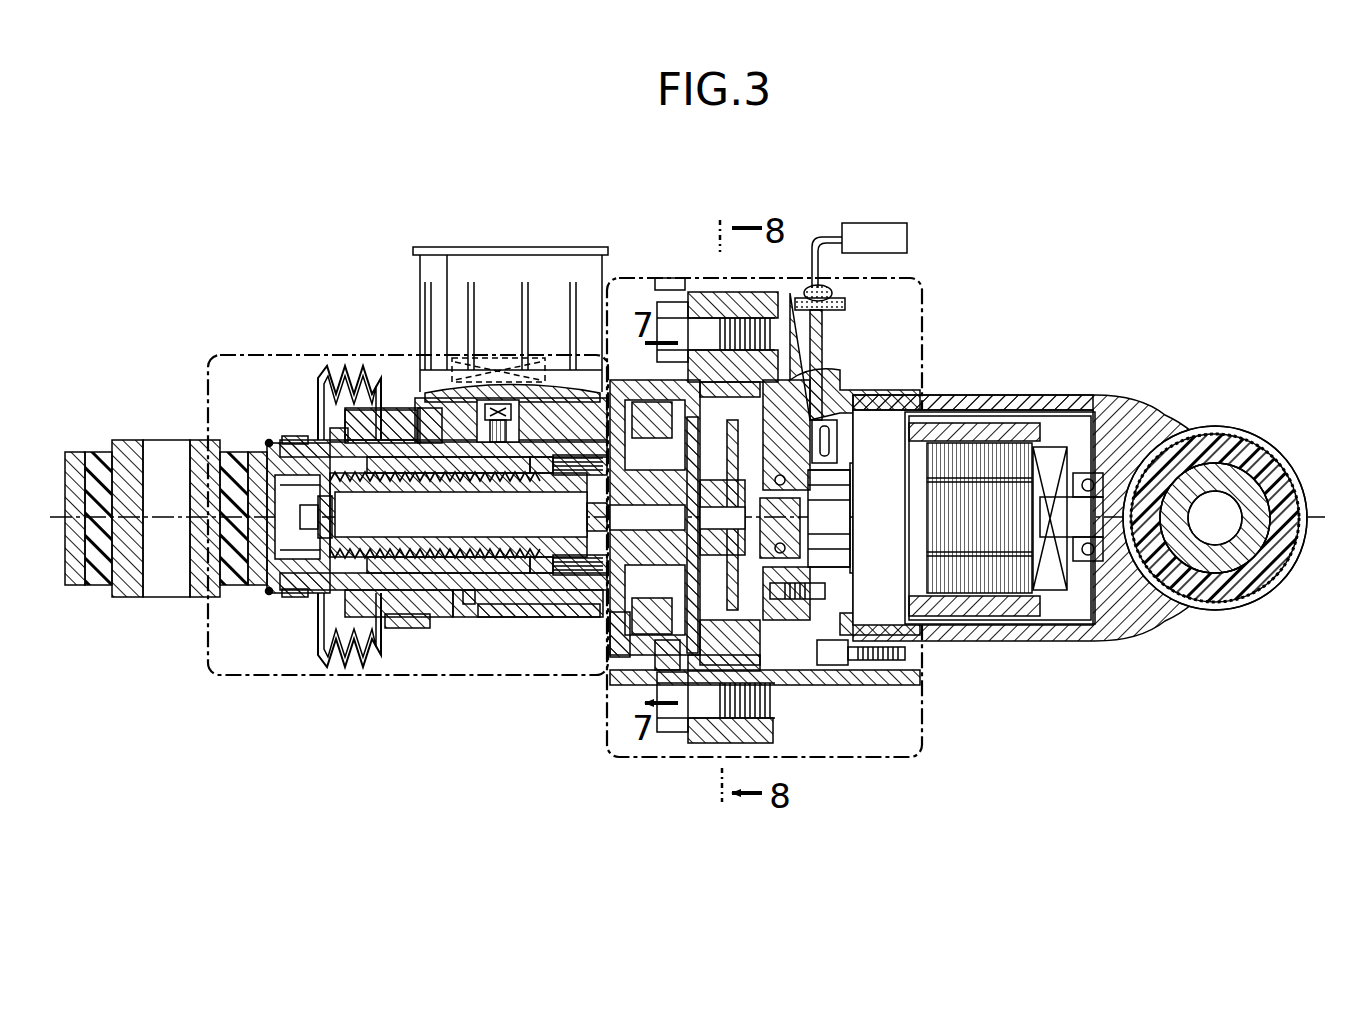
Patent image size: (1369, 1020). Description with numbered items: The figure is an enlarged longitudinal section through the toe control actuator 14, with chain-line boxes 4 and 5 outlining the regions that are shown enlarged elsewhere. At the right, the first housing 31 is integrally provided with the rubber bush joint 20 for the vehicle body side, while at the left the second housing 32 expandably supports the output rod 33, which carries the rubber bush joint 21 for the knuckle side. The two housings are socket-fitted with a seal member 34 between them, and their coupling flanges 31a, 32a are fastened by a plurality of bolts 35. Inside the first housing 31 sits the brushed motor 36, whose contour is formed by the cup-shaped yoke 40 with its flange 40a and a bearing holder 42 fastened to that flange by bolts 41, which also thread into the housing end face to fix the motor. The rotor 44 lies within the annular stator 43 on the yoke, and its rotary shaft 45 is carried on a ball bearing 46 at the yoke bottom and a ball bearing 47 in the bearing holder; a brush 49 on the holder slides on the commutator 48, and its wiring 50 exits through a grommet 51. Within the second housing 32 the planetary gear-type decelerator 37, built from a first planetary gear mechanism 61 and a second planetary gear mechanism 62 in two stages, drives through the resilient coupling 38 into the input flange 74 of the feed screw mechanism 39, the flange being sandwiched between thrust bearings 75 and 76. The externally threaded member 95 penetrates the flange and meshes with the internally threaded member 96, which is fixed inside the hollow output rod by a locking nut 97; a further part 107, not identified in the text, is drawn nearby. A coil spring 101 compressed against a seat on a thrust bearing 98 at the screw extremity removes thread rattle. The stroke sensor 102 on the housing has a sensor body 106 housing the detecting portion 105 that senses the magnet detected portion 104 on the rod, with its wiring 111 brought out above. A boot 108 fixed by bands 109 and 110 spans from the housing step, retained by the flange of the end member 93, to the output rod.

The actuator unit 4 is at (928, 282).
The cylinder unit 5 is at (376, 350).
The toe control actuator 14 is at (635, 222).
The rubber bush joint 20 is at (1222, 428).
The rubber bush joint 21 is at (128, 438).
The first housing 31 is at (1043, 392).
The coupling flange 31a is at (762, 352).
The second housing 32 is at (555, 623).
The coupling flange 32a is at (718, 293).
The output rod 33 is at (340, 598).
The seal member 34 is at (690, 715).
The bolt 35 is at (695, 300).
The brushed motor 36 is at (1003, 393).
The planetary gear-type decelerator 37 is at (762, 652).
The coupling 38 is at (587, 592).
The feed screw mechanism 39 is at (433, 620).
The yoke 40 is at (1068, 628).
The flange 40a is at (848, 395).
The bolt 41 is at (840, 662).
The bearing holder 42 is at (830, 380).
The annular stator 43 is at (965, 430).
The rotor 44 is at (1000, 590).
The rotary shaft 45 is at (835, 512).
The ball bearing 46 is at (1098, 555).
The ball bearing 47 is at (745, 525).
The commutator 48 is at (840, 535).
The brush 49 is at (835, 445).
The wiring 50 is at (814, 280).
The grommet 51 is at (835, 300).
The first planetary gear mechanism 61 is at (752, 595).
The second planetary gear mechanism 62 is at (712, 448).
The input flange 74 is at (595, 517).
The thrust bearing 75 is at (615, 660).
The thrust bearing 76 is at (660, 650).
The end member 93 is at (368, 428).
The externally threaded member 95 is at (452, 478).
The internally threaded member 96 is at (420, 475).
The locking nut 97 is at (545, 612).
The thrust bearing 98 is at (332, 510).
The coil spring 101 is at (267, 440).
The stroke sensor 102 is at (543, 246).
The detected portion 104 is at (510, 372).
The detecting portion 105 is at (475, 360).
The sensor body 106 is at (490, 265).
The pin 107 is at (469, 604).
The boot 108 is at (338, 428).
The band 109 is at (430, 410).
The band 110 is at (298, 436).
The wiring 111 is at (678, 278).